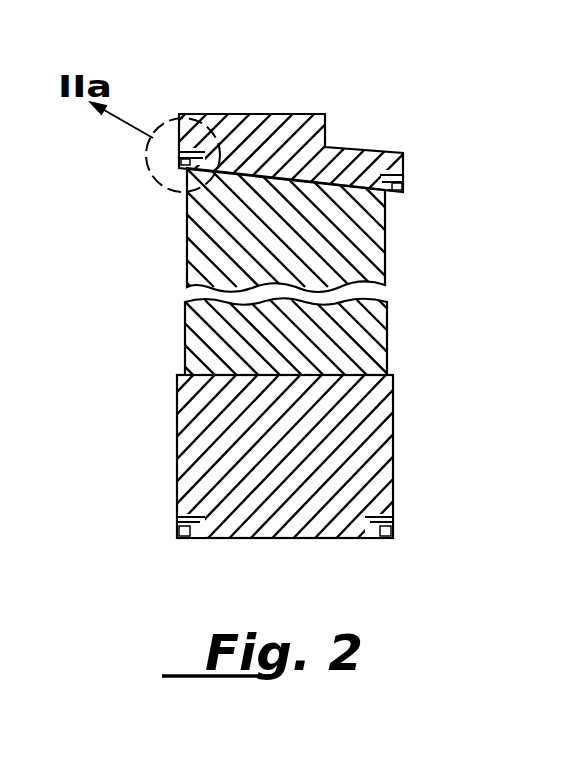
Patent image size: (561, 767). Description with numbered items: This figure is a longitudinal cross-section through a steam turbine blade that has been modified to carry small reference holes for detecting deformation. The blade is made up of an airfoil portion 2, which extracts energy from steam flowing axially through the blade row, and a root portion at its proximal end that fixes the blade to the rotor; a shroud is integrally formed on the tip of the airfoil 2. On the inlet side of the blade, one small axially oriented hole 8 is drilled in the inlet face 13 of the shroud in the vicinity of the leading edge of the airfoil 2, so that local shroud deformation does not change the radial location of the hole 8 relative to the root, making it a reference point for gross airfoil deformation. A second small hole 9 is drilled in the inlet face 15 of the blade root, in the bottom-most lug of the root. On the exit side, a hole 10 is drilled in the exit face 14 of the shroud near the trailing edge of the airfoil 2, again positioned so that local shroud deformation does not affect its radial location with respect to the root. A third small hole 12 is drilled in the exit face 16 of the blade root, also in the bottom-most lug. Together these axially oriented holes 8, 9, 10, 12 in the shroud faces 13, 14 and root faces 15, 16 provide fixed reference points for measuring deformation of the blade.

The airfoil portion 2 is at (387, 258).
The hole 8 is at (387, 160).
The second small hole 9 is at (378, 540).
The hole 10 is at (183, 172).
The third small hole 12 is at (190, 538).
The inlet face of the shroud 13 is at (405, 157).
The exit face of the shroud 14 is at (172, 130).
The inlet face of the blade root 15 is at (393, 462).
The exit face of the blade root 16 is at (177, 432).